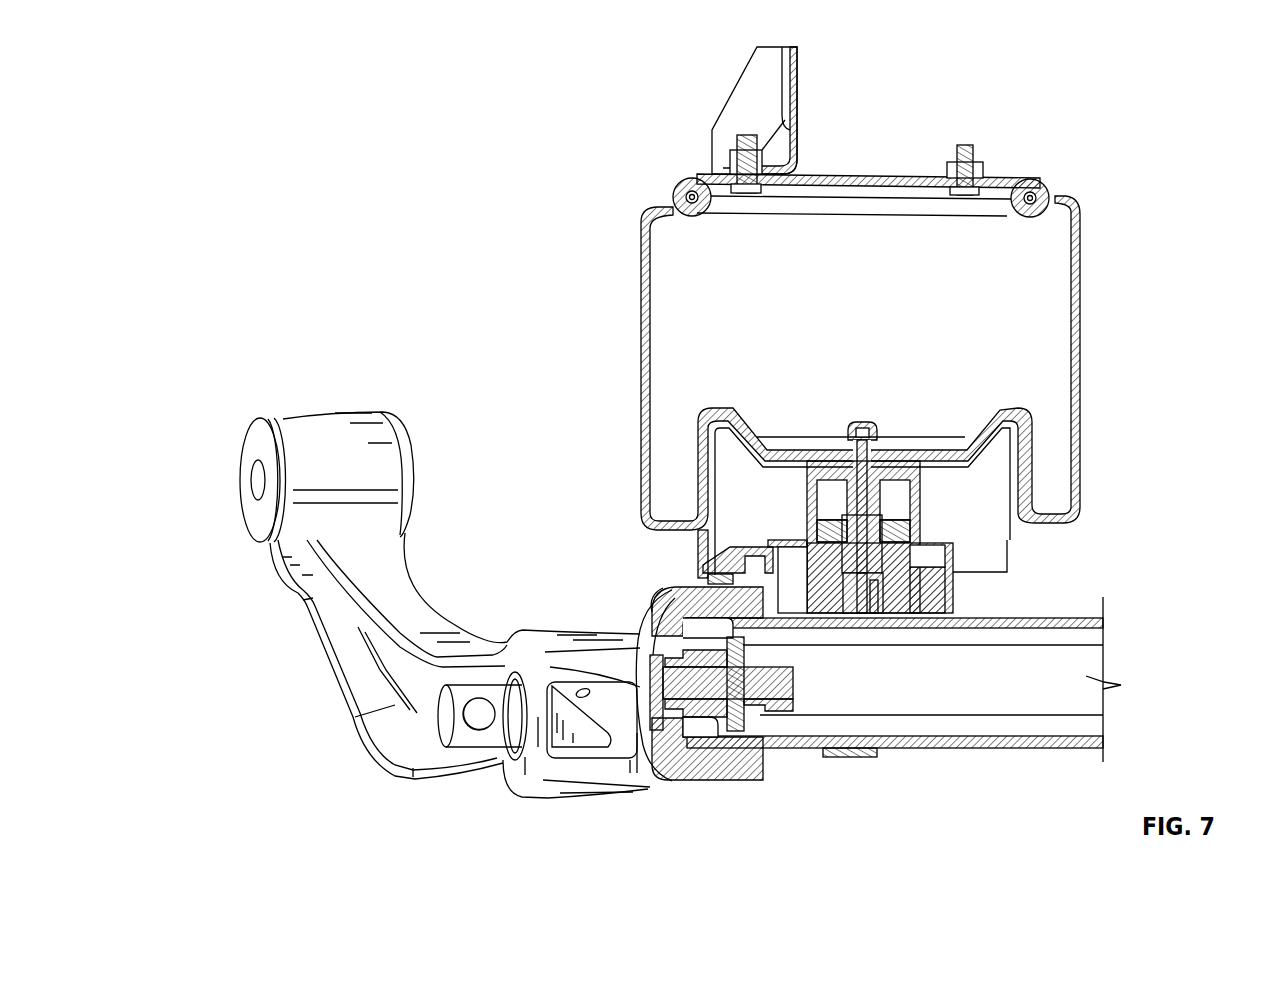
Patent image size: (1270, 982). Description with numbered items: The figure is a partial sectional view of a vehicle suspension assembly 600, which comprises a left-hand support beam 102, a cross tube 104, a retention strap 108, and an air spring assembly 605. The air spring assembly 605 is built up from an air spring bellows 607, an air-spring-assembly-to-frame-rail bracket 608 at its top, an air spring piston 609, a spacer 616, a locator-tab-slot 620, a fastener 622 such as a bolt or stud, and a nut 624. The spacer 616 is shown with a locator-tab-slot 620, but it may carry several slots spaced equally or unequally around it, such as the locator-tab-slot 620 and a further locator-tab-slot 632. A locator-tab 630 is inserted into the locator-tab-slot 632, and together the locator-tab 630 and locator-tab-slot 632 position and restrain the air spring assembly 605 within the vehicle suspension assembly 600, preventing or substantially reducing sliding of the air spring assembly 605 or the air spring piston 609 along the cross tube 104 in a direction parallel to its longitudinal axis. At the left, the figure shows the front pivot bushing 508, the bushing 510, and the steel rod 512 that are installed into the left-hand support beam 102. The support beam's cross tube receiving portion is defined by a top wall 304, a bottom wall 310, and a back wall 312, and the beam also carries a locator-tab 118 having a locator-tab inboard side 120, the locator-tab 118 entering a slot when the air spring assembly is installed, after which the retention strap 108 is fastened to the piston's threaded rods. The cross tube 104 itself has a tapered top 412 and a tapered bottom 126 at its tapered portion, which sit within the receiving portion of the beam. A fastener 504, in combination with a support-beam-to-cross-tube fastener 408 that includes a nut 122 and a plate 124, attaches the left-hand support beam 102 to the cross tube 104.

The vehicle suspension assembly 600 is at (330, 118).
The left-hand support beam 102 is at (405, 573).
The cross tube 104 is at (1018, 748).
The retention strap 108 is at (863, 757).
The locator-tab 118 is at (708, 578).
The locator-tab inboard side 120 is at (782, 585).
The nut 122 is at (778, 700).
The plate 124 is at (748, 655).
The tapered bottom 126 is at (722, 755).
The top wall 304 is at (730, 612).
The bottom wall 310 is at (722, 745).
The back wall 312 is at (712, 713).
The support-beam-to-cross-tube fastener 408 is at (765, 715).
The tapered top 412 is at (712, 640).
The fastener 504 is at (608, 682).
The front pivot bushing 508 is at (257, 527).
The bushing 510 is at (513, 758).
The steel rod 512 is at (442, 710).
The air spring assembly 605 is at (1090, 503).
The air spring bellows 607 is at (1083, 315).
The air-spring-assembly-to-frame-rail bracket 608 is at (798, 85).
The air spring piston 609 is at (1025, 542).
The spacer 616 is at (957, 580).
The locator-tab-slot 620 is at (722, 562).
The fastener 622 is at (862, 420).
The nut 624 is at (925, 613).
The locator-tab 630 is at (922, 608).
The locator-tab-slot 632 is at (932, 553).